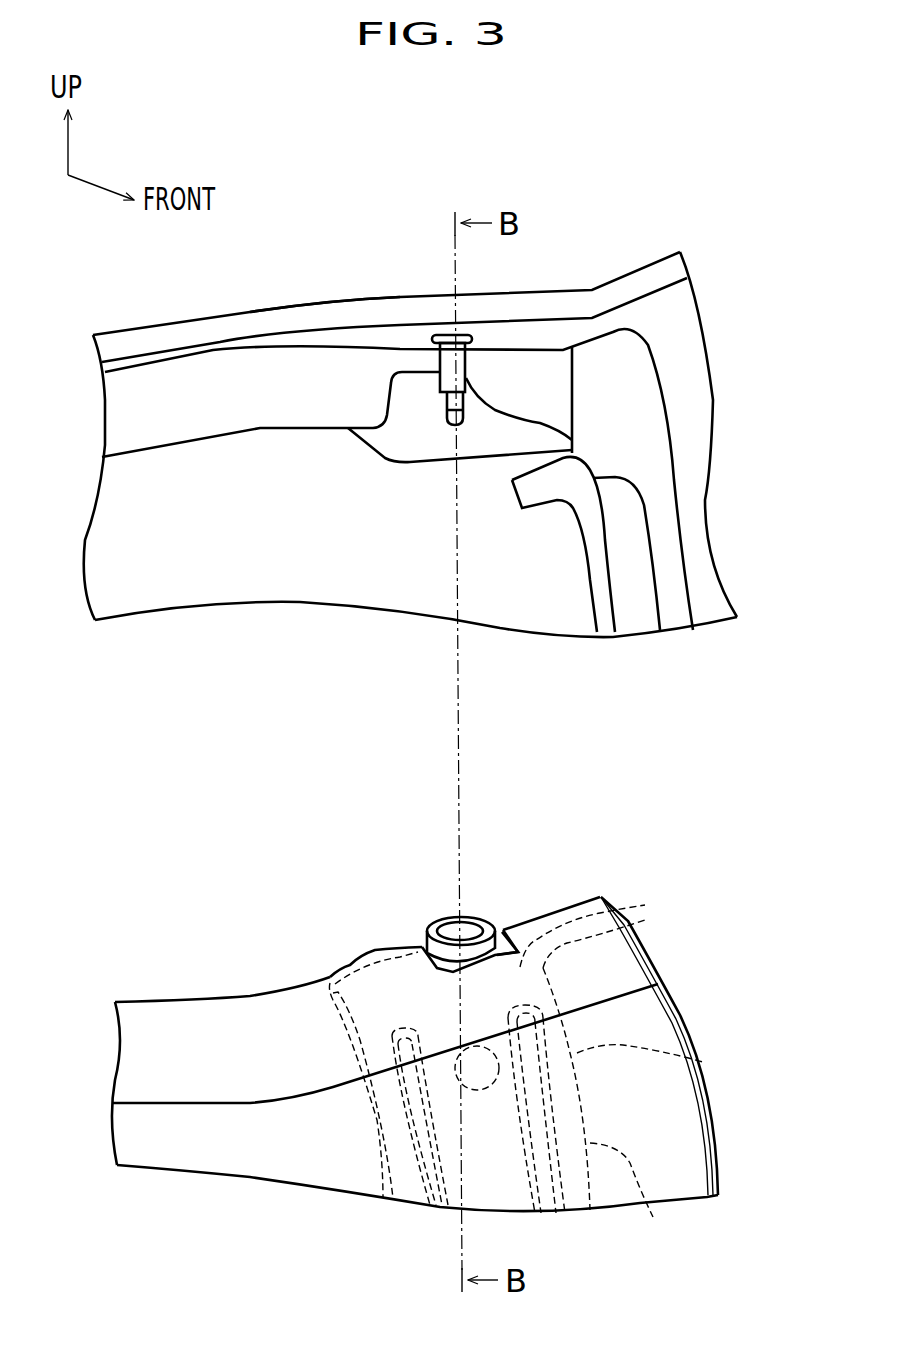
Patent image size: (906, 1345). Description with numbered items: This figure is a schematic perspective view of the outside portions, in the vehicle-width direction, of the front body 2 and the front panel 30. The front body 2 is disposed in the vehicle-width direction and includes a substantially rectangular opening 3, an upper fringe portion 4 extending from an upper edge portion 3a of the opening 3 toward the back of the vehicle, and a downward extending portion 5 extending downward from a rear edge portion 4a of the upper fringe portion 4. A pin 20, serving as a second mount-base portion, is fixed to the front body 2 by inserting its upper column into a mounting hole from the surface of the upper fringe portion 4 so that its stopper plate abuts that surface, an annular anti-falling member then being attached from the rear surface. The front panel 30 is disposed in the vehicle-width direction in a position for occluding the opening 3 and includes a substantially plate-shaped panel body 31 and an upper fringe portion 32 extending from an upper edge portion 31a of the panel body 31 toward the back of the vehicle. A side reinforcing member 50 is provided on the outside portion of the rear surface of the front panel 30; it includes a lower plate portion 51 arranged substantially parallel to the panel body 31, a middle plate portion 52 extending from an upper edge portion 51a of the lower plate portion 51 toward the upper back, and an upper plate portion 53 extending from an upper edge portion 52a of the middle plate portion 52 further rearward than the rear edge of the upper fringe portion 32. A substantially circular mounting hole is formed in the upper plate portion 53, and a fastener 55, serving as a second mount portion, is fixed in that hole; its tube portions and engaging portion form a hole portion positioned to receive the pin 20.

The front body 2 is at (152, 323).
The opening 3 is at (400, 309).
The upper edge portion of the opening 3a is at (343, 328).
The upper fringe portion 4 is at (284, 342).
The rear edge portion of the upper fringe portion 4a is at (217, 351).
The downward extending portion 5 is at (120, 410).
The pin 20 is at (468, 360).
The front panel 30 is at (550, 910).
The panel body 31 is at (668, 1110).
The upper edge portion of the panel body 31a is at (600, 1000).
The upper fringe portion 32 is at (623, 977).
The side reinforcing member 50 is at (338, 958).
The lower plate portion 51 is at (580, 1195).
The upper edge portion of the lower plate portion 51a is at (653, 1217).
The middle plate portion 52 is at (703, 1062).
The upper edge portion of the middle plate portion 52a is at (600, 940).
The upper plate portion 53 is at (613, 905).
The fastener 55 is at (437, 919).